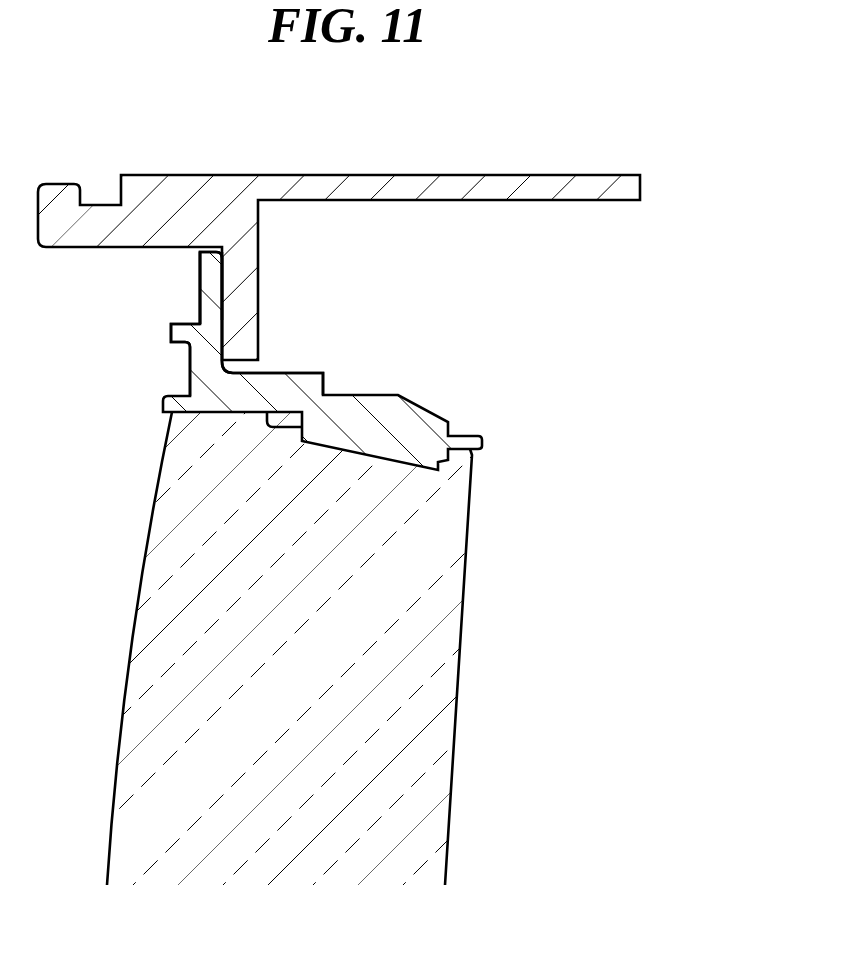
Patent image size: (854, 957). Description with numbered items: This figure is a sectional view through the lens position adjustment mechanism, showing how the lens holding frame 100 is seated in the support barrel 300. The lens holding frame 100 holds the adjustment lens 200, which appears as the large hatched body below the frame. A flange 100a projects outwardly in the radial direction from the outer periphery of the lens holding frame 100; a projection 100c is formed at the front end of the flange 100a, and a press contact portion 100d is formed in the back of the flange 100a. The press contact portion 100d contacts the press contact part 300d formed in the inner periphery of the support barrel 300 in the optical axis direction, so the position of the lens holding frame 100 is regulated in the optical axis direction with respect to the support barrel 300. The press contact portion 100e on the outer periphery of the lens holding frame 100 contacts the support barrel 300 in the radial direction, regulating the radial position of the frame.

The support barrel 300 is at (268, 188).
The press contact part 300d is at (203, 295).
The lens holding frame 100 is at (422, 420).
The flange 100a is at (192, 344).
The projection 100c is at (202, 265).
The press contact portion 100d is at (222, 303).
The press contact portion 100e is at (284, 372).
The adjustment lens 200 is at (148, 704).